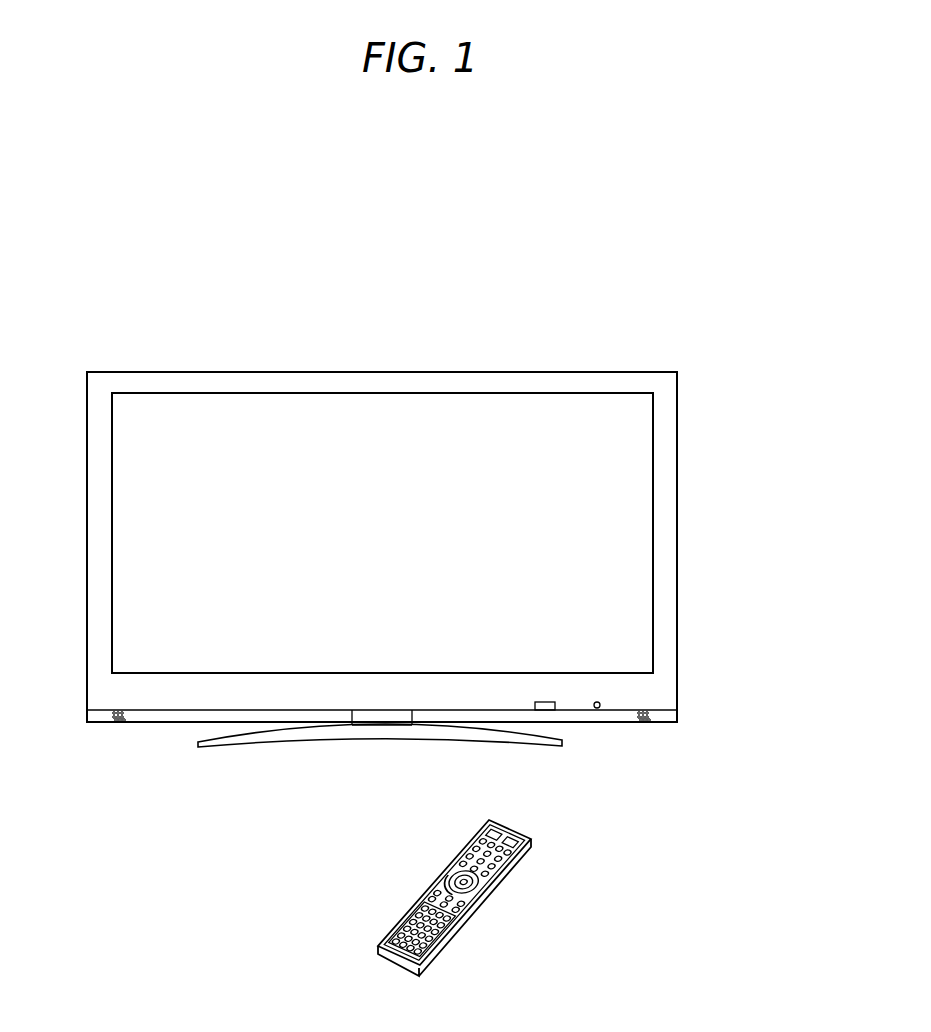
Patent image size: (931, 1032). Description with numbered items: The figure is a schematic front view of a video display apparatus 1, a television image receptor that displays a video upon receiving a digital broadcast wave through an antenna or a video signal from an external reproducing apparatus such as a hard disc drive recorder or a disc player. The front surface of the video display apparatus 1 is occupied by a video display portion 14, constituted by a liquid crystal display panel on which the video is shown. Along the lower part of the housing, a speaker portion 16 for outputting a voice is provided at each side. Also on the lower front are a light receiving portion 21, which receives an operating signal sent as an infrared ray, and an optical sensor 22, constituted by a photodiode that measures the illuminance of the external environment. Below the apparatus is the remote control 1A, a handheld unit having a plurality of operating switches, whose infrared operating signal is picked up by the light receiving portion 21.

The video display apparatus 1 is at (388, 372).
The video display portion 14 is at (634, 498).
The speaker portion 16 is at (110, 717).
The light receiving portion 21 is at (545, 710).
The optical sensor 22 is at (597, 710).
The remote control 1A is at (437, 888).